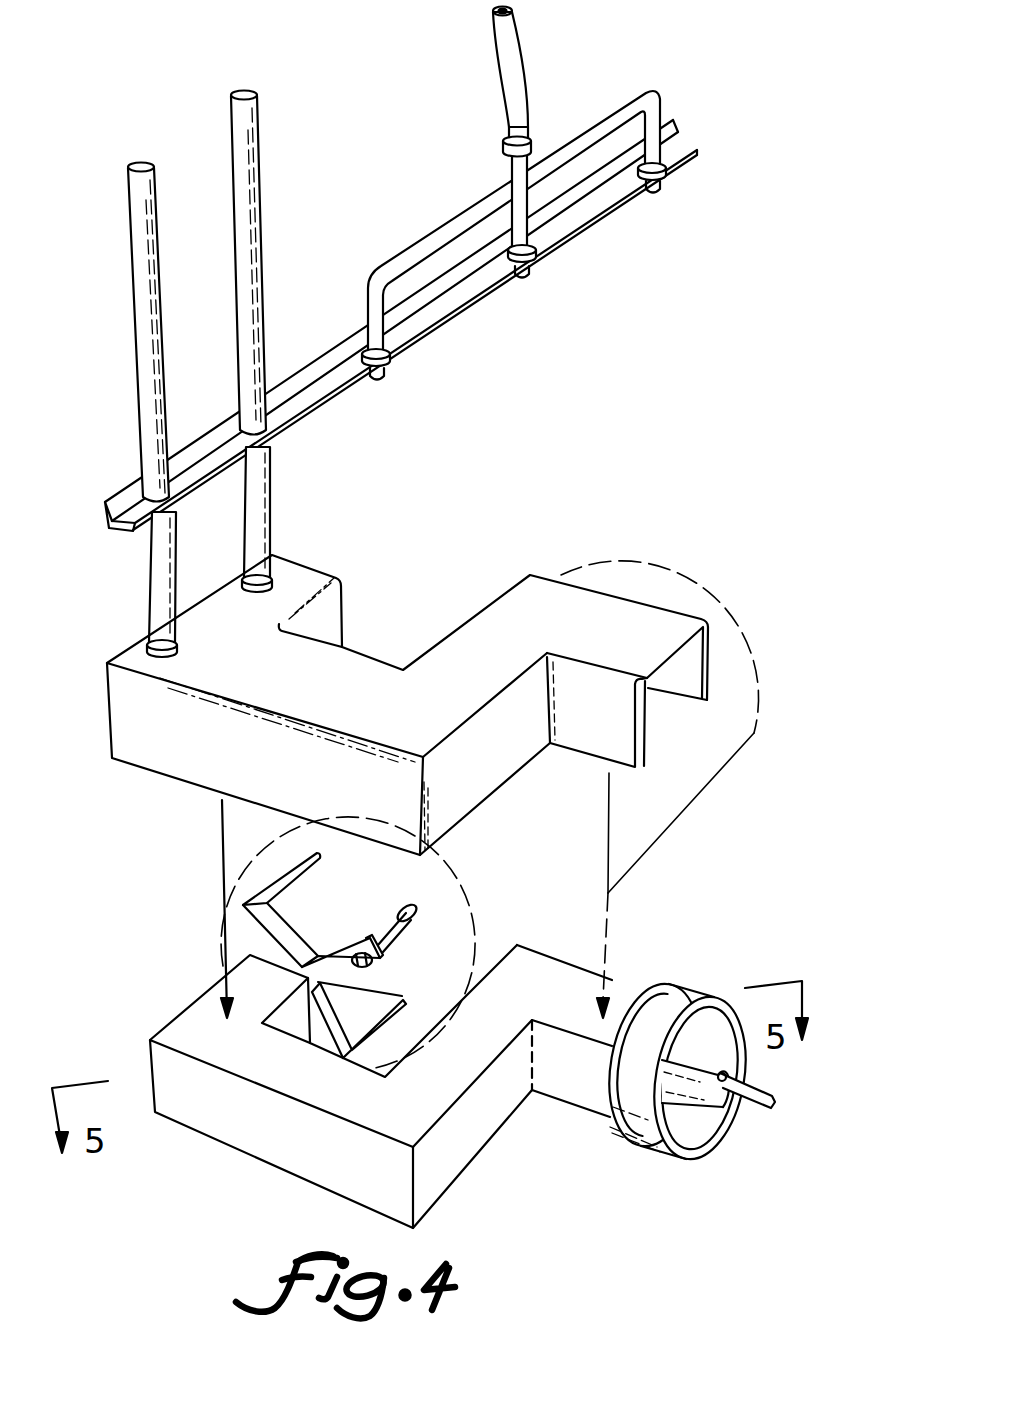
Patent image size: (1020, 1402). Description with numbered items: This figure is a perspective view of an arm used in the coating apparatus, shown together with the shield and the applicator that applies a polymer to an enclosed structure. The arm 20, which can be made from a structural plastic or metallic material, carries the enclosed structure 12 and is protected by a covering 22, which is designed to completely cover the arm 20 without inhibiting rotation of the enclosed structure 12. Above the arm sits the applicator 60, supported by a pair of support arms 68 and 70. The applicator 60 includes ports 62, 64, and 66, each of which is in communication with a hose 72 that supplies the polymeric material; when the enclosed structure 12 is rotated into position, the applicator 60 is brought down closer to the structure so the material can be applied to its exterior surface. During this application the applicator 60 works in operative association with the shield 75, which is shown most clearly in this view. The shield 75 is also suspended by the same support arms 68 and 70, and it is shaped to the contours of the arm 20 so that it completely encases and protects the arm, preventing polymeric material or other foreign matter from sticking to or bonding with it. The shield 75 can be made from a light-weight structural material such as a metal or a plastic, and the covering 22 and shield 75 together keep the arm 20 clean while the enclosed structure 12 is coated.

The enclosed structure 12 is at (562, 860).
The arm 20 is at (152, 991).
The covering 22 is at (467, 1139).
The applicator 60 is at (683, 110).
The port 62 is at (658, 186).
The port 64 is at (530, 277).
The port 66 is at (384, 374).
The support arm 68 is at (254, 232).
The support arm 70 is at (139, 358).
The hose 72 is at (524, 104).
The shield 75 is at (353, 708).